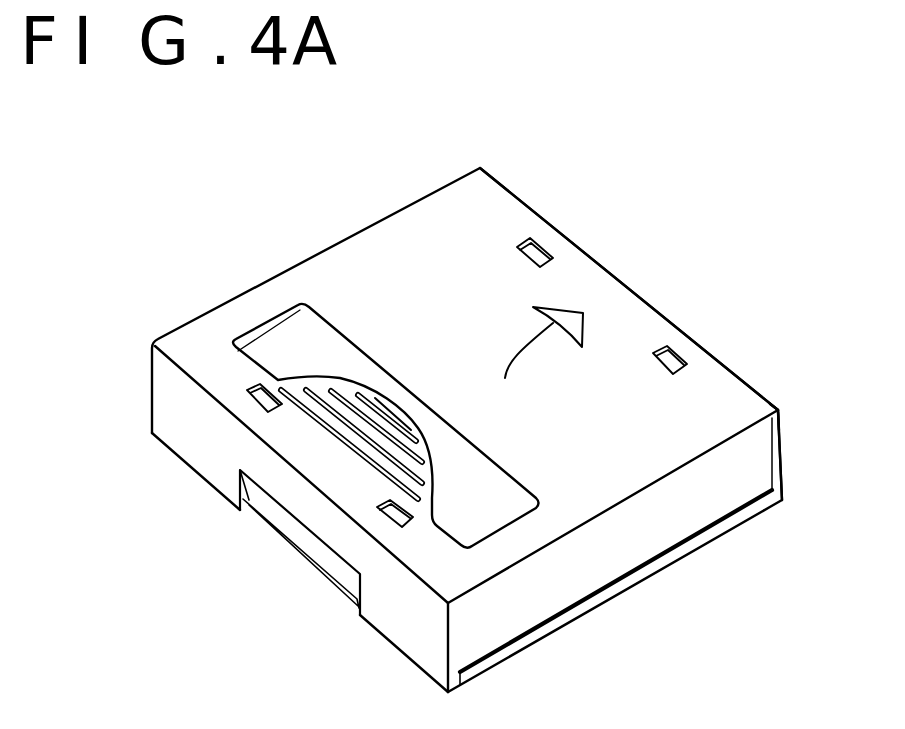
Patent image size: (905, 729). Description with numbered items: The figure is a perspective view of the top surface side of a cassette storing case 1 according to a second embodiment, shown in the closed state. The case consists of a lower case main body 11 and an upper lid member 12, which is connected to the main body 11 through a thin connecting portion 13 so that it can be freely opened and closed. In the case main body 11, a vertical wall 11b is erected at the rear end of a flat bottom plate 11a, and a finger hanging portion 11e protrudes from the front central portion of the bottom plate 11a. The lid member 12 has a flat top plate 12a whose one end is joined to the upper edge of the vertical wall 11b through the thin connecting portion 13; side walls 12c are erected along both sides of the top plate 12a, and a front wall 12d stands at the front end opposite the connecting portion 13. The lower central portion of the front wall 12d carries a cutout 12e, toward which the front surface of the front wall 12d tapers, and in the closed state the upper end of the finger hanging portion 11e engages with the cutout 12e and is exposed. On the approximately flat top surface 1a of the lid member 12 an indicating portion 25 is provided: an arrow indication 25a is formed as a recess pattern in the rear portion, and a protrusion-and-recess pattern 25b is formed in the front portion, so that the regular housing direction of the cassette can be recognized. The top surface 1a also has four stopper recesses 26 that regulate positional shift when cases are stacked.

The cassette storing case 1 is at (310, 148).
The top surface 1a is at (604, 300).
The case main body 11 is at (614, 602).
The bottom plate 11a is at (525, 645).
The vertical wall 11b is at (778, 455).
The finger hanging portion 11e is at (282, 540).
The lid member 12 is at (176, 331).
The top plate 12a is at (362, 261).
The side walls 12c is at (683, 518).
The front wall 12d is at (186, 444).
The cutout 12e is at (330, 563).
The thin connecting portion 13 is at (779, 408).
The indicating portion 25 is at (583, 372).
The arrow indication 25a is at (505, 378).
The protrusion-and-recess pattern 25b is at (410, 432).
The stopper recesses 26 is at (540, 256).